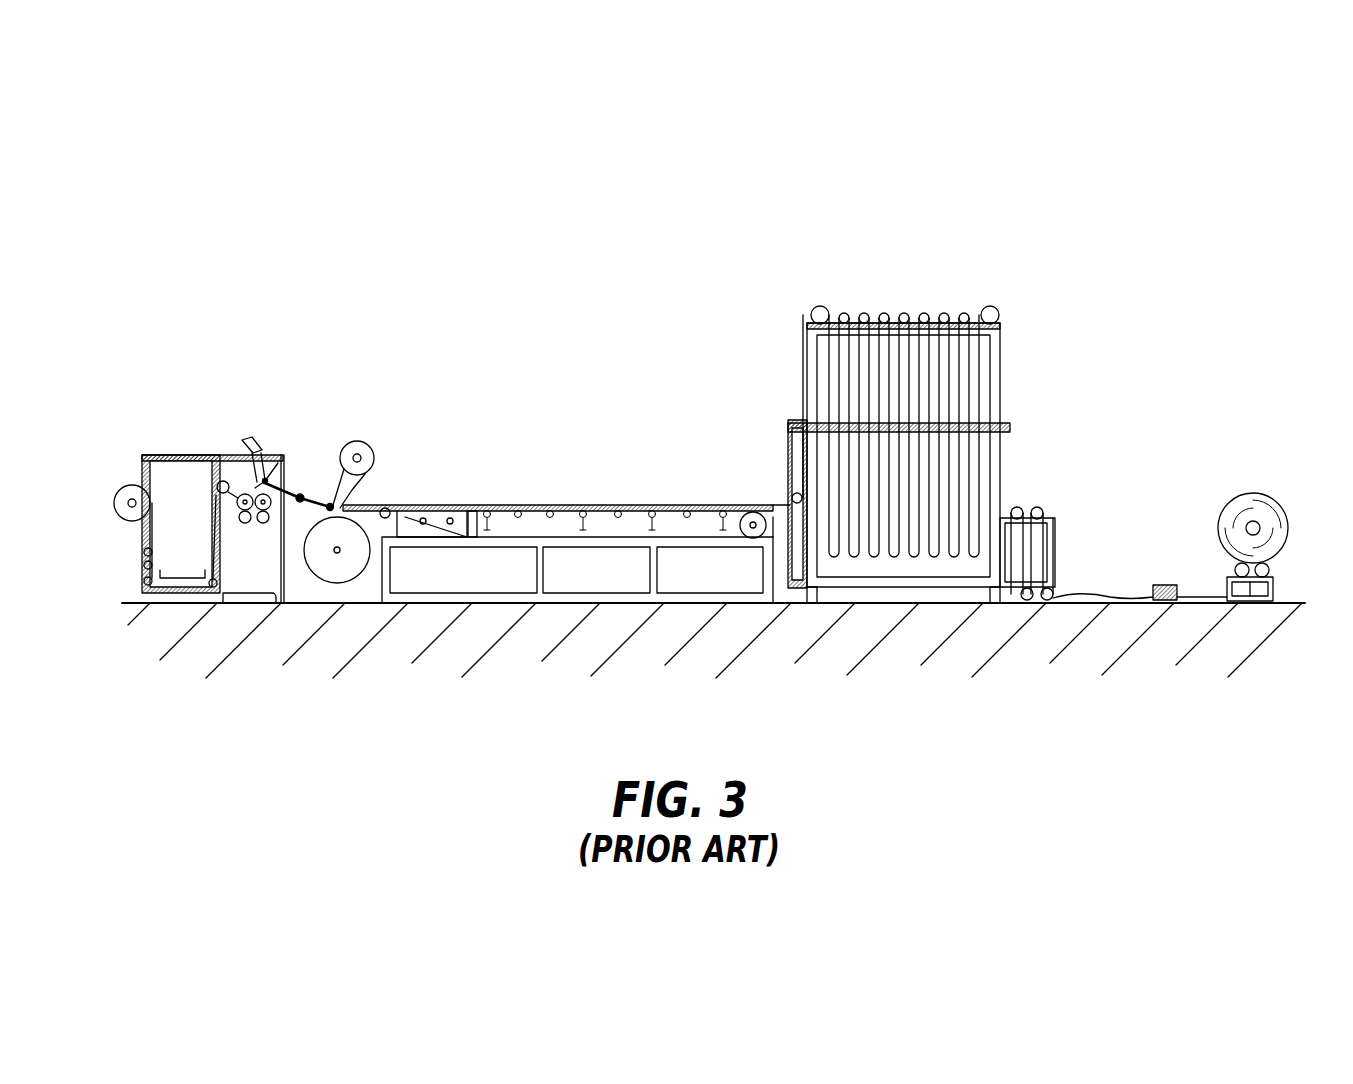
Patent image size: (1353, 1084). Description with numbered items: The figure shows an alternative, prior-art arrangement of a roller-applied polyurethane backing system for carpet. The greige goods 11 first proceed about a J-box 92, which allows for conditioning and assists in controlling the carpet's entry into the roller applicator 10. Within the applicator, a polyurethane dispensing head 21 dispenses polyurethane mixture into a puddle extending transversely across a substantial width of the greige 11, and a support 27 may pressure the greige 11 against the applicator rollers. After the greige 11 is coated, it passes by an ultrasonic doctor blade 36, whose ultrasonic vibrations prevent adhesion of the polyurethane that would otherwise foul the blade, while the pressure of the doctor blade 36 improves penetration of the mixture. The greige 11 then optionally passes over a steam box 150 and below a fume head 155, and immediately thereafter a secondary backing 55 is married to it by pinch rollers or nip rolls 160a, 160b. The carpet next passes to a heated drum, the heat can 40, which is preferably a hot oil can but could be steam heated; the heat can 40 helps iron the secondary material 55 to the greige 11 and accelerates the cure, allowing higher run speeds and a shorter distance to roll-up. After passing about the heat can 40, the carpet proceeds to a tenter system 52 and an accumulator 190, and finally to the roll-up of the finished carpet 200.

The roller applicator 10 is at (222, 466).
The greige 11 is at (122, 486).
The J-box 92 is at (187, 562).
The polyurethane dispensing head 21 is at (256, 448).
The ultrasonic doctor blade 36 is at (282, 452).
The support 27 is at (256, 522).
The steam box 150 is at (296, 490).
The fume head 155 is at (305, 490).
The pinch roller 160a is at (328, 502).
The pinch roller 160b is at (342, 505).
The secondary backing 55 is at (377, 447).
The heat can 40 is at (350, 583).
The tenter system 52 is at (633, 500).
The accumulator 190 is at (931, 298).
The roll-up of the finished carpet 200 is at (1243, 492).